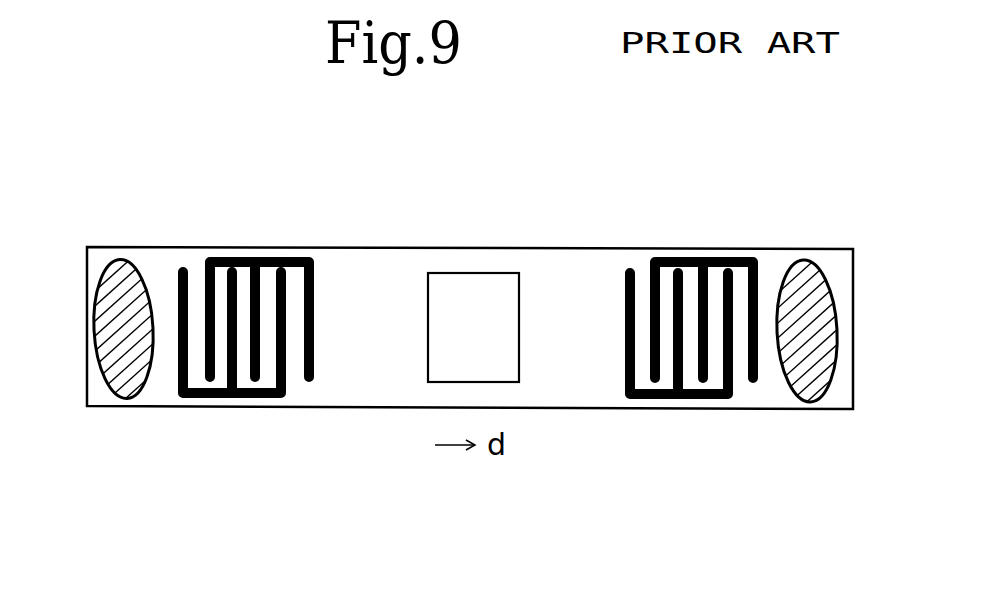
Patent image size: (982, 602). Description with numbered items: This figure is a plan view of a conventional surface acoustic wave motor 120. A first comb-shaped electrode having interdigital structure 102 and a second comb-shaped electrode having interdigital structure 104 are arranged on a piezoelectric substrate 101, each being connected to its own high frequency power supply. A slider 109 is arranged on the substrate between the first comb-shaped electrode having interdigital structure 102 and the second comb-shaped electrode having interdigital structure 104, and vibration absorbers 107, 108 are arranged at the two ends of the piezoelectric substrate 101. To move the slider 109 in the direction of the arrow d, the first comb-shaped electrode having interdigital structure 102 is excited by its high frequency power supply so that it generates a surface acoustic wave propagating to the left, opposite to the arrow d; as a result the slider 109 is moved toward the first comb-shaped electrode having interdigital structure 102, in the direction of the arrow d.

The surface acoustic wave motor 120 is at (346, 440).
The piezoelectric substrate 101 is at (593, 268).
The first comb-shaped electrode having interdigital structure 102 is at (708, 258).
The second comb-shaped electrode having interdigital structure 104 is at (285, 258).
The vibration absorber 107 is at (817, 272).
The vibration absorber 108 is at (132, 260).
The slider 109 is at (473, 280).